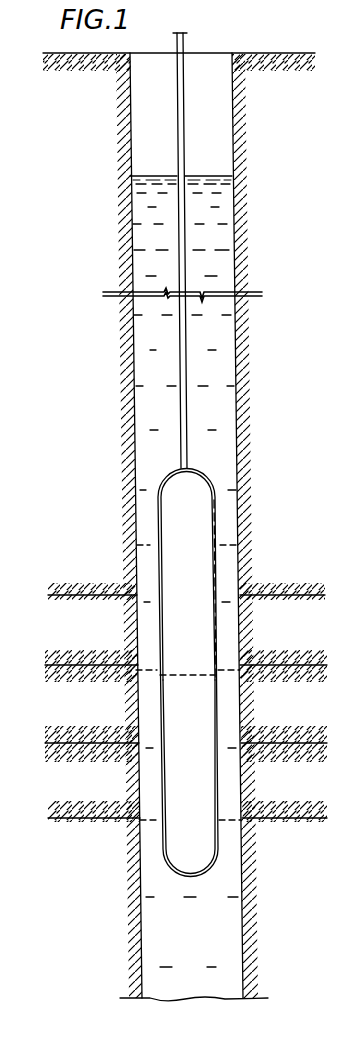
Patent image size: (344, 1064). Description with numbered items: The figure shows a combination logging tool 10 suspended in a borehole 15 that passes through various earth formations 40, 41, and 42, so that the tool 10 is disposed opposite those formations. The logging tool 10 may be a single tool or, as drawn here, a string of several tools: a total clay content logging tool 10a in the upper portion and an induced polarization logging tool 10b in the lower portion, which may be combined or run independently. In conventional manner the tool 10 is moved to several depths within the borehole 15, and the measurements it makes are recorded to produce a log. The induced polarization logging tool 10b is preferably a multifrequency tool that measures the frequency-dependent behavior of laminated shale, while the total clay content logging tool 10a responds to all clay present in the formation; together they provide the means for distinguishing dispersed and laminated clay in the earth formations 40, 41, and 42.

The borehole 15 is at (132, 351).
The logging tool 10 is at (135, 681).
The total clay content logging tool 10a is at (178, 538).
The induced polarization logging tool 10b is at (182, 840).
The earth formation 40 is at (90, 791).
The earth formation 41 is at (86, 713).
The earth formation 42 is at (88, 645).